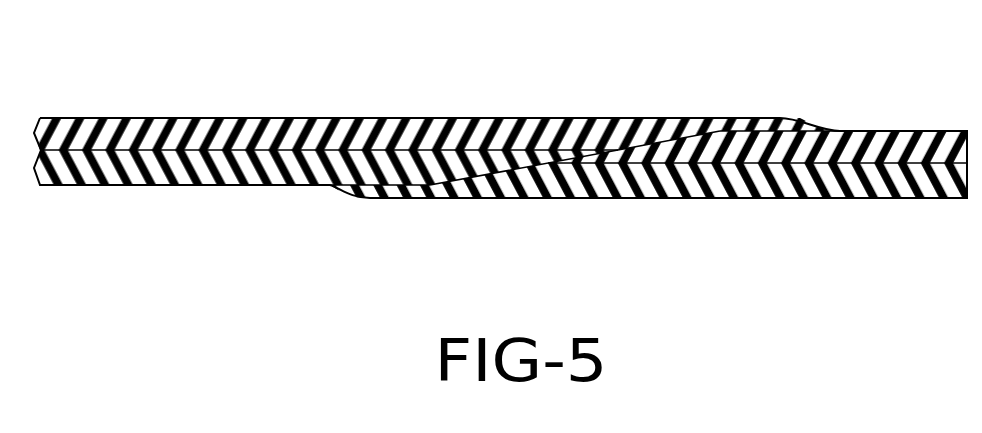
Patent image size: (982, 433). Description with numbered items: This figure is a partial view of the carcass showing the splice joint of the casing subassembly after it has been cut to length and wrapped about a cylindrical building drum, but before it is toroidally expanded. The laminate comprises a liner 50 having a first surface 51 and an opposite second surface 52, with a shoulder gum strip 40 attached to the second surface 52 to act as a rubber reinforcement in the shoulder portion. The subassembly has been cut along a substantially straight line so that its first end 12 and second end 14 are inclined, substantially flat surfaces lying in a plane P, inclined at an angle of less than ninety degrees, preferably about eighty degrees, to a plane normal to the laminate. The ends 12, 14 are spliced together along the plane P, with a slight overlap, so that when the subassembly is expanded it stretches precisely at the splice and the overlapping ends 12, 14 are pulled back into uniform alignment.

The first end 12 is at (705, 110).
The second end 14 is at (545, 192).
The shoulder gum strip 40 is at (120, 172).
The liner 50 is at (187, 123).
The first surface 51 is at (500, 94).
The second surface 52 is at (500, 218).
The plane P is at (668, 140).